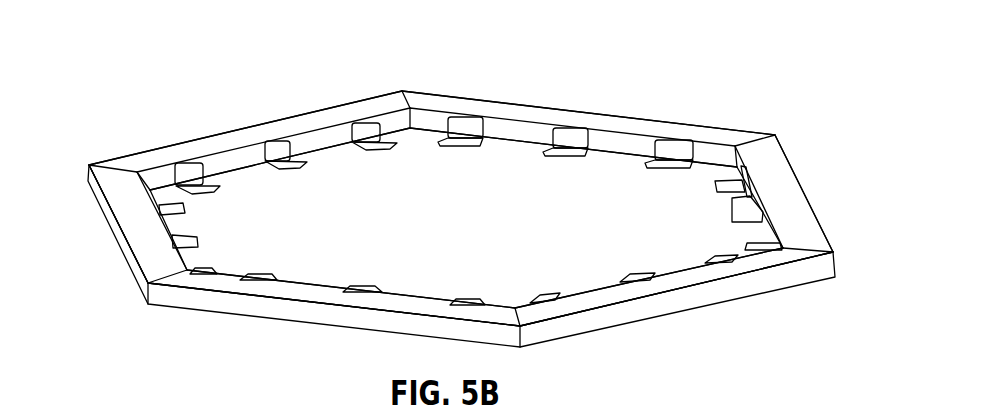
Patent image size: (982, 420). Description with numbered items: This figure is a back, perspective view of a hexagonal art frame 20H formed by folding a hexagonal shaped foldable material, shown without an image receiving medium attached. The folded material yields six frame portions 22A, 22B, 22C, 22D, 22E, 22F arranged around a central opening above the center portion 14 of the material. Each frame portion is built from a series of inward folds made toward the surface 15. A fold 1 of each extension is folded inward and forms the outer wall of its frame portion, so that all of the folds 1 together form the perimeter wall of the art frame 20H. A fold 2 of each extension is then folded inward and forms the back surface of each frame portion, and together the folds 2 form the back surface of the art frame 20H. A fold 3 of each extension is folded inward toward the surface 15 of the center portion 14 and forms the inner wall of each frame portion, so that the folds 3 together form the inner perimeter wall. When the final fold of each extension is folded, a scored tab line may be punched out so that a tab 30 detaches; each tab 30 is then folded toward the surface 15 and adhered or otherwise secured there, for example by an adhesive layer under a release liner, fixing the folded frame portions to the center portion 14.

The fold 1 is at (116, 233).
The fold 2 is at (688, 272).
The fold 3 is at (738, 210).
The center portion 14 is at (463, 212).
The surface 15 is at (538, 263).
The art frame 20H is at (632, 80).
The frame portion 22A is at (690, 118).
The frame portion 22B is at (250, 123).
The frame portion 22C is at (119, 249).
The frame portion 22D is at (335, 322).
The frame portion 22E is at (714, 292).
The frame portion 22F is at (800, 160).
The tab 30 is at (370, 145).